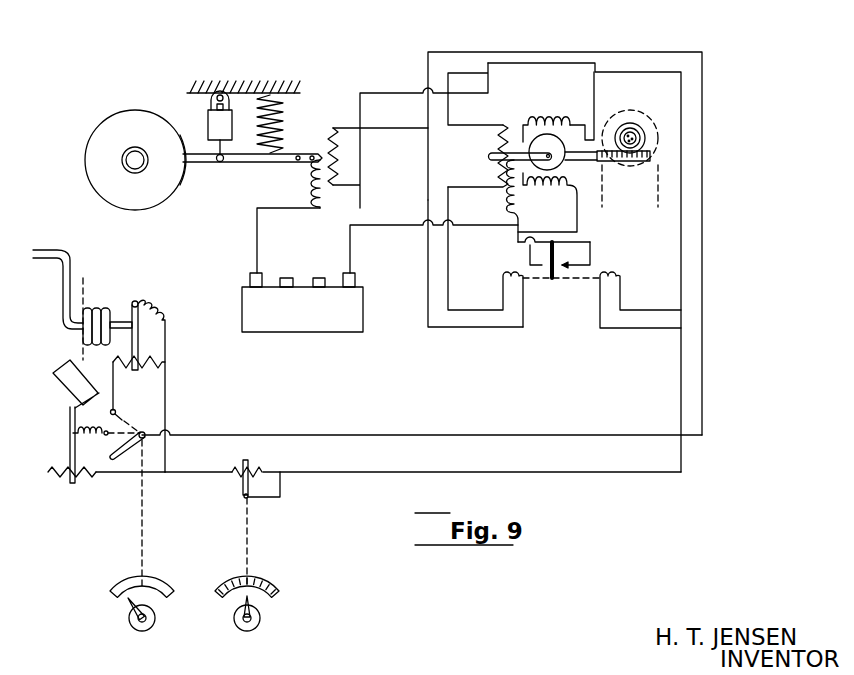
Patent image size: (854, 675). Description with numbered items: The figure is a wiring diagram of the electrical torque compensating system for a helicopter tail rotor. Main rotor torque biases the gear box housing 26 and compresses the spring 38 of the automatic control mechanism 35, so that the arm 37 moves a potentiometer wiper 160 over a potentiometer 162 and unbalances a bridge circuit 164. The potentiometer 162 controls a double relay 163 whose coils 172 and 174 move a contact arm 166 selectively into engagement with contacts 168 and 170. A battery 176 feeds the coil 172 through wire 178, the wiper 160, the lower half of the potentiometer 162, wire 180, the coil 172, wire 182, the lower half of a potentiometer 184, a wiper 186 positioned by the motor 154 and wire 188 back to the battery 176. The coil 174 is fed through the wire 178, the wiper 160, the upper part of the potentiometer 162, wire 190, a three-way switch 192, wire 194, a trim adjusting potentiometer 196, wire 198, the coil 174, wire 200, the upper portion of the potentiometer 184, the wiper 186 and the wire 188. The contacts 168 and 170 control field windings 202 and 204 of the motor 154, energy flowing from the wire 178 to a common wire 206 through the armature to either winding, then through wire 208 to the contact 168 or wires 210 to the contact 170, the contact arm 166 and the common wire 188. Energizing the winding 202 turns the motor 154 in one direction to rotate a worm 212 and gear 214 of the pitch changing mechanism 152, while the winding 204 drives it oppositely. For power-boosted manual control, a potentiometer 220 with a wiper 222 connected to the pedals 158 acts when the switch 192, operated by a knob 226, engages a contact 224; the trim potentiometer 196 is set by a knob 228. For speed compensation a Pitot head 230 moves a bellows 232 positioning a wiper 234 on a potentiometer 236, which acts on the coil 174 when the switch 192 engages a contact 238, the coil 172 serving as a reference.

The housing 26 is at (100, 130).
The automatic control mechanism 35 is at (245, 104).
The arm 37 is at (258, 164).
The spring 38 is at (282, 105).
The worm and pulley 152 is at (652, 118).
The motor 154 is at (585, 128).
The pedals 158 is at (72, 360).
The potentiometer wiper 160 is at (334, 130).
The potentiometer 162 is at (330, 126).
The double relay 163 is at (565, 308).
The bridge circuit 164 is at (430, 180).
The contact arm 166 is at (555, 246).
The contact 168 is at (518, 242).
The contact 170 is at (568, 265).
The relay coil 172 is at (507, 292).
The relay coil 174 is at (618, 282).
The battery 176 is at (313, 326).
The wire 178 is at (257, 240).
The wire 180 is at (428, 315).
The wire 182 is at (448, 213).
The potentiometer 184 is at (492, 154).
The wiper 186 is at (518, 133).
The wire 188 is at (377, 230).
The wire 190 is at (481, 52).
The three-way switch 192 is at (156, 435).
The wire 194 is at (180, 473).
The trim adjusting potentiometer 196 is at (233, 492).
The wire 198 is at (610, 473).
The wire 200 is at (683, 245).
The field winding 202 is at (573, 122).
The field winding 204 is at (572, 196).
The common wire 206 is at (398, 92).
The wire 208 is at (603, 205).
The wires 210 is at (604, 208).
The worm 212 is at (657, 176).
The gear 214 is at (647, 142).
The potentiometer 220 is at (58, 470).
The wiper 222 is at (57, 463).
The contact 224 is at (104, 437).
The knob 226 is at (132, 629).
The knob 228 is at (238, 628).
The Pitot head 230 is at (47, 250).
The bellows 232 is at (100, 308).
The potentiometer wiper 234 is at (133, 302).
The potentiometer 236 is at (156, 360).
The contact 238 is at (117, 411).